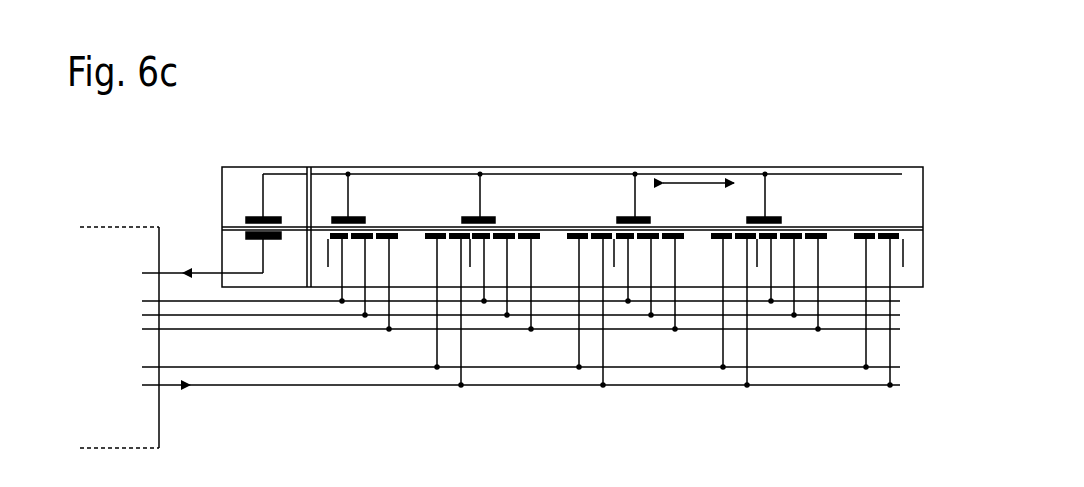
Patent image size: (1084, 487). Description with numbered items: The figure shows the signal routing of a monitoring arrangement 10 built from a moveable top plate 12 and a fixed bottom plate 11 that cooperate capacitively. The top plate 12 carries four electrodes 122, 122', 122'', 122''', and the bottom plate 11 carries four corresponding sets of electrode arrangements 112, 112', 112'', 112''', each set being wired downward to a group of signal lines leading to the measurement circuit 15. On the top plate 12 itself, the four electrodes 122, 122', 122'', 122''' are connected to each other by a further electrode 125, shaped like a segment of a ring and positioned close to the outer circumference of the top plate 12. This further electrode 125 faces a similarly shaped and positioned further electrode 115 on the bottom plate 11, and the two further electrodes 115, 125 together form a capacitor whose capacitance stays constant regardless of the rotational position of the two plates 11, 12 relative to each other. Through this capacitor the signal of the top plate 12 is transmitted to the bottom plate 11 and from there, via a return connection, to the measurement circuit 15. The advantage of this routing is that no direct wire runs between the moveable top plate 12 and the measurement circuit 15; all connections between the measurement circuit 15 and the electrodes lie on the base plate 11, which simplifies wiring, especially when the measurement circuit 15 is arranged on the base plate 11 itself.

The variable capacitor device 10 is at (767, 82).
The bottom plate 11 is at (932, 278).
The top plate 12 is at (918, 160).
The measurement circuit 15 is at (490, 337).
The further electrode 115 is at (247, 230).
The further electrode 125 is at (254, 217).
The electrode 122 is at (365, 161).
The electrode 122' is at (497, 161).
The electrode 122'' is at (654, 162).
The electrode 122''' is at (785, 159).
The electrode arrangement 112 is at (392, 348).
The electrode arrangement 112' is at (538, 348).
The electrode arrangement 112'' is at (681, 348).
The electrode arrangement 112''' is at (834, 348).